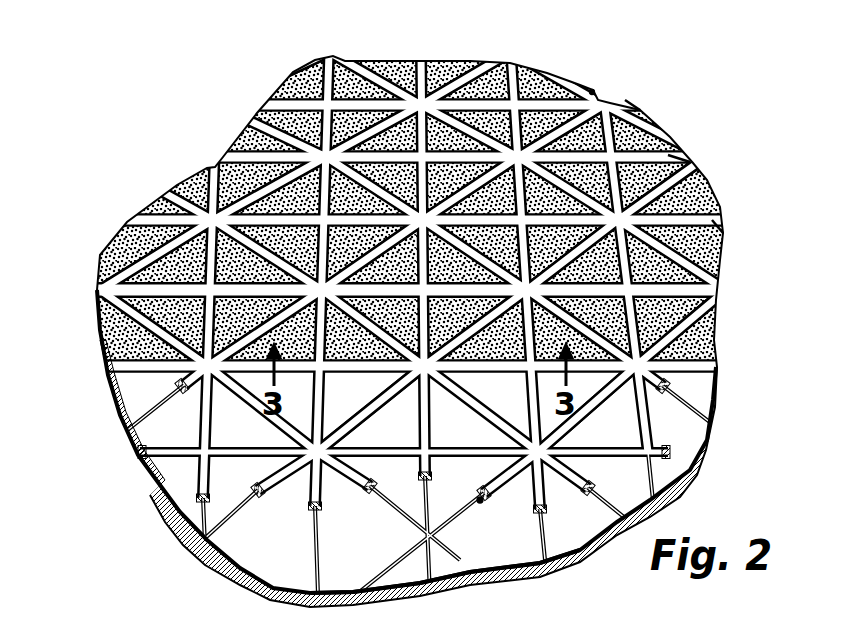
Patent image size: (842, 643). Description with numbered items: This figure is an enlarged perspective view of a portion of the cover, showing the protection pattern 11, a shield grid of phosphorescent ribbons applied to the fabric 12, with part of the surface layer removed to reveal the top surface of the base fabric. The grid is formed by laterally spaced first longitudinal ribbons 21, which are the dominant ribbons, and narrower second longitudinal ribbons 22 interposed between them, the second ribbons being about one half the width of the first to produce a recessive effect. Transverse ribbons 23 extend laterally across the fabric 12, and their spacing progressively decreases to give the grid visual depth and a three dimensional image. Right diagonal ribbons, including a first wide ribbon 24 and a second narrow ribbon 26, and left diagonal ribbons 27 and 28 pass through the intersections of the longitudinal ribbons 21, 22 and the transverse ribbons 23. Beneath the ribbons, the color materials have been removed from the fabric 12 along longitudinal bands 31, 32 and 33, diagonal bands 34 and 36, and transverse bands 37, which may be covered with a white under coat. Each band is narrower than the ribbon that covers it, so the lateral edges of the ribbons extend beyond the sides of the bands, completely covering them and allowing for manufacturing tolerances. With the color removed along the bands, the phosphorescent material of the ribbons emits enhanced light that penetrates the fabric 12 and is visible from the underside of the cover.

The protection pattern 11 is at (528, 66).
The fabric 12 is at (577, 530).
The first longitudinal ribbons 21 is at (327, 70).
The second longitudinal ribbons 22 is at (420, 63).
The transverse ribbons 23 is at (637, 104).
The first wide right diagonal ribbon 24 is at (453, 80).
The second narrow right diagonal ribbon 26 is at (590, 92).
The left diagonal ribbon 27 is at (250, 119).
The left diagonal ribbon 28 is at (177, 192).
The longitudinal band 31 is at (300, 592).
The longitudinal band 32 is at (527, 567).
The longitudinal band 33 is at (425, 497).
The diagonal band 34 is at (397, 515).
The diagonal band 36 is at (378, 576).
The transverse bands 37 is at (700, 370).